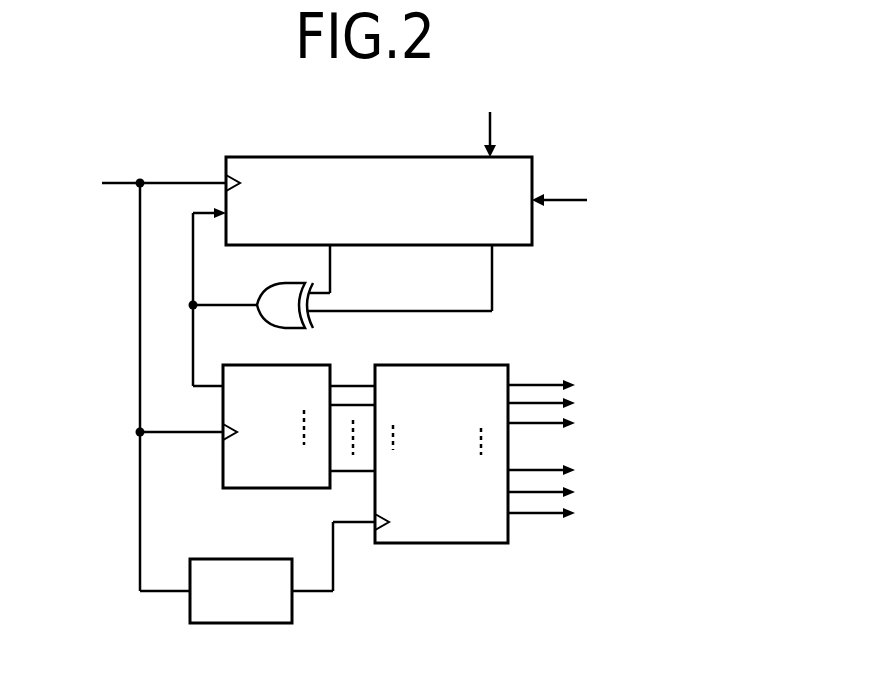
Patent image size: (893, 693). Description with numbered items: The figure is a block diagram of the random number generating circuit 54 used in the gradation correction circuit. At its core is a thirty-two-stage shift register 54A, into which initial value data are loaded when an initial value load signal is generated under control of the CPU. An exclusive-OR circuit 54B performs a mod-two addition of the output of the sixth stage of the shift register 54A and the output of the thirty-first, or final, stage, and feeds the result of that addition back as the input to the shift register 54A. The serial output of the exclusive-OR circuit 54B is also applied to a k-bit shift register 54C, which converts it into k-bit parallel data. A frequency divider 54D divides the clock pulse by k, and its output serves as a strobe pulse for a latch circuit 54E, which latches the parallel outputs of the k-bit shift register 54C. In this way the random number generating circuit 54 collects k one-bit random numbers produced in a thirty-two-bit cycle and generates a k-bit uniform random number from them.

The random number generating circuit 54 is at (618, 138).
The 32-stage shift register 54A is at (333, 157).
The exclusive-OR circuit 54B is at (274, 284).
The k-bit shift register 54C is at (306, 364).
The frequency divider 54D is at (257, 559).
The latch circuit 54E is at (432, 544).